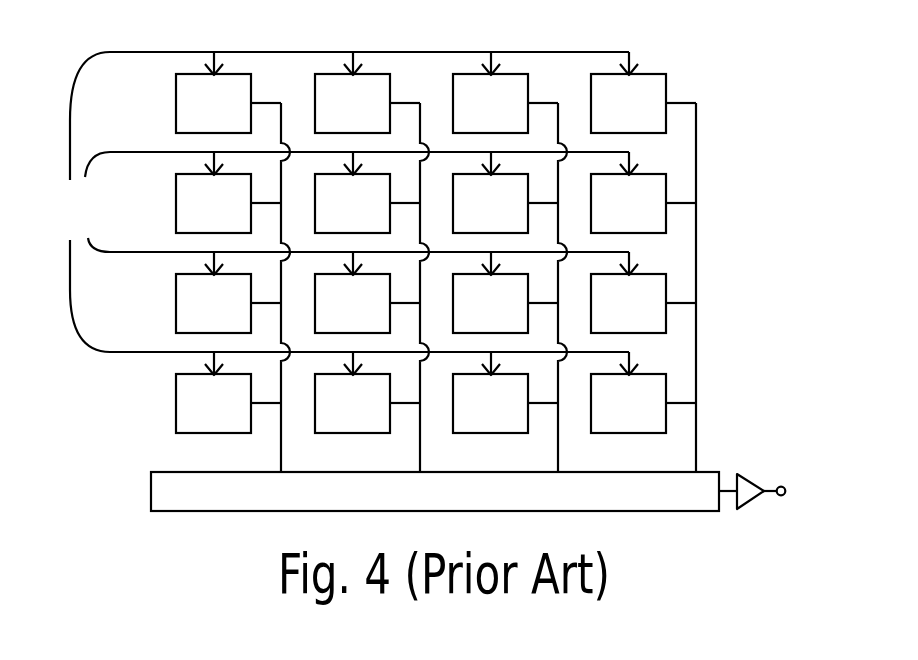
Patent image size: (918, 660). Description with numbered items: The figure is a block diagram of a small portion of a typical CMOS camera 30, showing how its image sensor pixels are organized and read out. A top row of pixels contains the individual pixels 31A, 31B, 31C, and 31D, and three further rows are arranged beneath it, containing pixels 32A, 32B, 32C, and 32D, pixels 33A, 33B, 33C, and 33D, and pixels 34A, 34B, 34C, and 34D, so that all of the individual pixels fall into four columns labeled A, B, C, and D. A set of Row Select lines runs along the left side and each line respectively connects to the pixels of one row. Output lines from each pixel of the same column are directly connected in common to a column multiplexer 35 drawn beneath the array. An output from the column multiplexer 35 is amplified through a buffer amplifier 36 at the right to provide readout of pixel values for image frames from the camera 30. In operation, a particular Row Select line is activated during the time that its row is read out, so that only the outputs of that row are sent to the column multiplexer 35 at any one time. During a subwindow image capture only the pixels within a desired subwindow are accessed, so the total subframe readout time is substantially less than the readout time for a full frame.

The CMOS camera 30 is at (402, 248).
The pixel 31A is at (228, 92).
The pixel 31B is at (367, 92).
The pixel 31C is at (505, 92).
The pixel 31D is at (643, 92).
The pixel 32A is at (228, 192).
The pixel 32B is at (367, 192).
The pixel 32C is at (505, 192).
The pixel 32D is at (643, 192).
The pixel 33A is at (228, 292).
The pixel 33B is at (367, 292).
The pixel 33C is at (505, 292).
The pixel 33D is at (643, 292).
The pixel 34A is at (228, 392).
The pixel 34B is at (367, 392).
The pixel 34C is at (505, 392).
The pixel 34D is at (643, 392).
The column multiplexer 35 is at (223, 513).
The buffer amplifier 36 is at (752, 480).